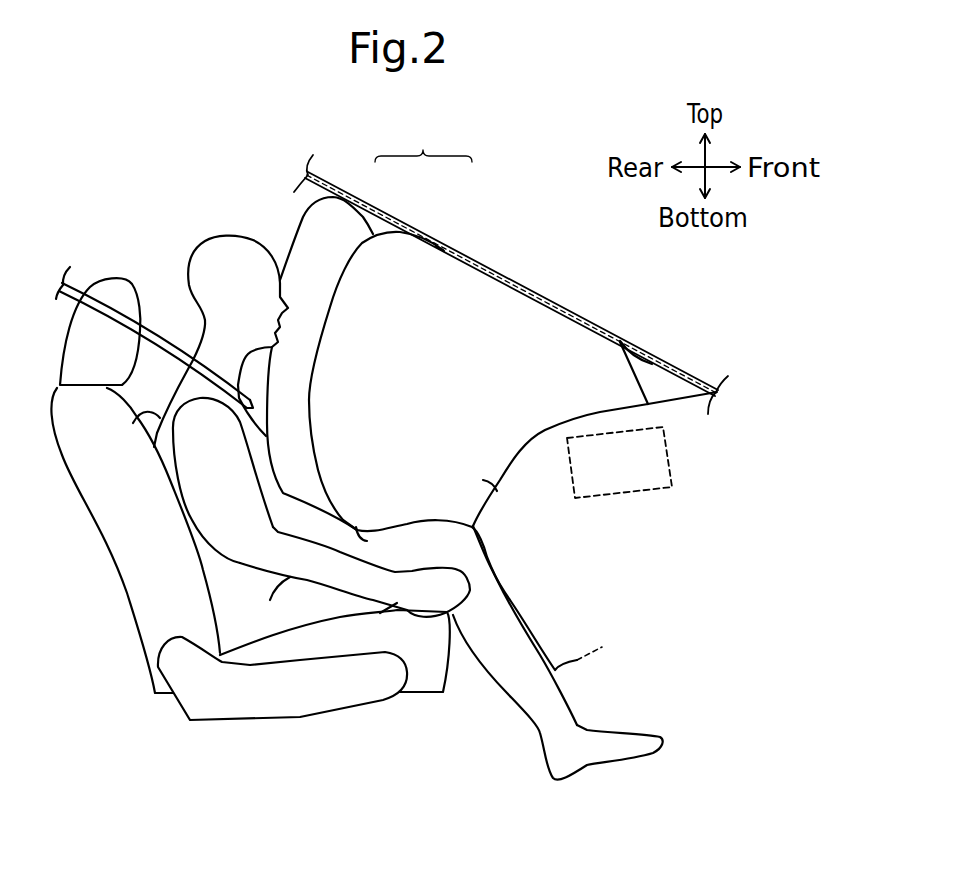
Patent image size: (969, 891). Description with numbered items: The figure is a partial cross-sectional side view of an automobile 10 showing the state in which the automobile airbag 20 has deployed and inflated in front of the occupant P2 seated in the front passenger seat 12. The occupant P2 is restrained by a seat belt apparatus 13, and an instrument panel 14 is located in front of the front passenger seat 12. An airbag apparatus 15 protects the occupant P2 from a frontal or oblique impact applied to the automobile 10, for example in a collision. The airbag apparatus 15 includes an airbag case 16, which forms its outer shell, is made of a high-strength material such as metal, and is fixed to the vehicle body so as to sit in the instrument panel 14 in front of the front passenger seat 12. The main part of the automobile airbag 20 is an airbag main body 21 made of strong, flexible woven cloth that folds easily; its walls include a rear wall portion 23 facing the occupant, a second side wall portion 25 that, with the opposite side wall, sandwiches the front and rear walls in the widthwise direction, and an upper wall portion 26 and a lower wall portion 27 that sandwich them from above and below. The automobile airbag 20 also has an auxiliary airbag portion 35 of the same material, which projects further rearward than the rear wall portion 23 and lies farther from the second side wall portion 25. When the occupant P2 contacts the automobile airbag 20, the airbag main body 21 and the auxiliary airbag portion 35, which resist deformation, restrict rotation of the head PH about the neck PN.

The automobile 10 is at (529, 270).
The front passenger seat 12 is at (114, 543).
The seat belt apparatus 13 is at (70, 268).
The instrument panel 14 is at (533, 454).
The airbag apparatus 15 is at (671, 388).
The airbag case 16 is at (674, 448).
The automobile airbag 20 is at (423, 138).
The airbag main body 21 is at (442, 250).
The rear wall portion 23 is at (343, 262).
The second side wall portion 25 is at (497, 489).
The upper wall portion 26 is at (641, 367).
The lower wall portion 27 is at (365, 539).
The auxiliary airbag portion 35 is at (375, 223).
The head PH is at (227, 233).
The neck PN is at (203, 333).
The occupant P2 is at (133, 423).